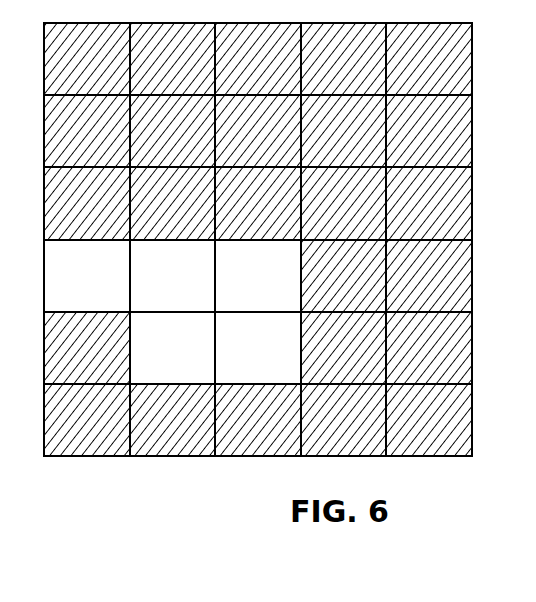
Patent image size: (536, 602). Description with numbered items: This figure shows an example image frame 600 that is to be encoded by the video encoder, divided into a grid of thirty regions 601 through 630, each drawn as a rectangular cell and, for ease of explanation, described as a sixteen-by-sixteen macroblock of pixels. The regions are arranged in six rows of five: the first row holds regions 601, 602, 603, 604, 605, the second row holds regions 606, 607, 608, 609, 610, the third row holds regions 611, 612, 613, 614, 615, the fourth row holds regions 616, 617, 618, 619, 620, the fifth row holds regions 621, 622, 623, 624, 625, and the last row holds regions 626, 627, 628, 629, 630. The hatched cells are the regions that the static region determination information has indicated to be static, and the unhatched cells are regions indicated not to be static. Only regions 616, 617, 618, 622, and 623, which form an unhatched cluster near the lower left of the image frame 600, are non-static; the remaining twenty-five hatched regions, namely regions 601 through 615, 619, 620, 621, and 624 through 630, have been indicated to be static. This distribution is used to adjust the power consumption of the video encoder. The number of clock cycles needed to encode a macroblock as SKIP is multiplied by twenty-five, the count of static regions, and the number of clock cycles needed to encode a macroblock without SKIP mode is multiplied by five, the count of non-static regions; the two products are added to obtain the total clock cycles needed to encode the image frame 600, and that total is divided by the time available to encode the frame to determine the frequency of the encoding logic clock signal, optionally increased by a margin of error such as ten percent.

The image frame 600 is at (238, 471).
The region 601 is at (87, 59).
The region 602 is at (172, 59).
The region 603 is at (258, 59).
The region 604 is at (343, 59).
The region 605 is at (429, 59).
The region 606 is at (87, 131).
The region 607 is at (172, 131).
The region 608 is at (258, 131).
The region 609 is at (343, 131).
The region 610 is at (429, 131).
The region 611 is at (87, 203).
The region 612 is at (172, 203).
The region 613 is at (258, 203).
The region 614 is at (343, 203).
The region 615 is at (429, 203).
The region 616 is at (87, 276).
The region 617 is at (172, 276).
The region 618 is at (258, 276).
The region 619 is at (343, 276).
The region 620 is at (429, 276).
The region 621 is at (87, 348).
The region 622 is at (172, 348).
The region 623 is at (258, 348).
The region 624 is at (343, 348).
The region 625 is at (429, 348).
The region 626 is at (87, 420).
The region 627 is at (172, 420).
The region 628 is at (258, 420).
The region 629 is at (343, 420).
The region 630 is at (429, 420).